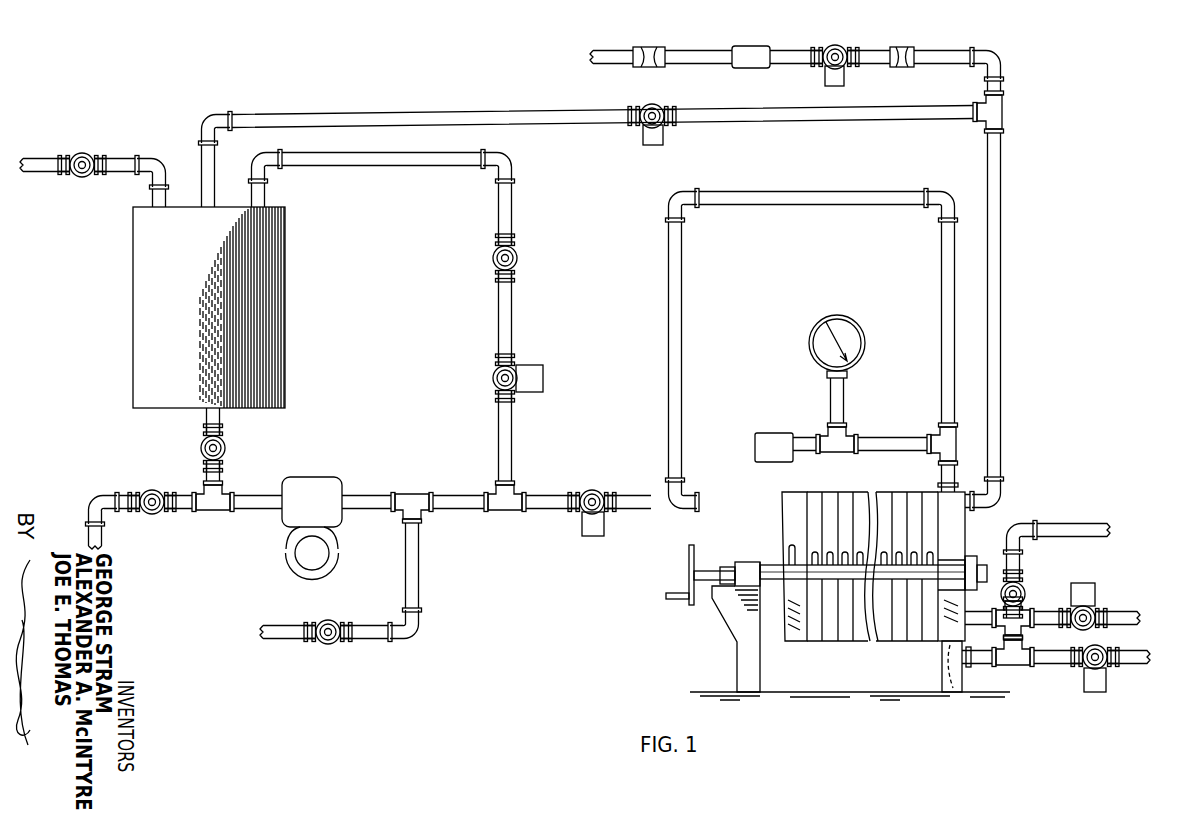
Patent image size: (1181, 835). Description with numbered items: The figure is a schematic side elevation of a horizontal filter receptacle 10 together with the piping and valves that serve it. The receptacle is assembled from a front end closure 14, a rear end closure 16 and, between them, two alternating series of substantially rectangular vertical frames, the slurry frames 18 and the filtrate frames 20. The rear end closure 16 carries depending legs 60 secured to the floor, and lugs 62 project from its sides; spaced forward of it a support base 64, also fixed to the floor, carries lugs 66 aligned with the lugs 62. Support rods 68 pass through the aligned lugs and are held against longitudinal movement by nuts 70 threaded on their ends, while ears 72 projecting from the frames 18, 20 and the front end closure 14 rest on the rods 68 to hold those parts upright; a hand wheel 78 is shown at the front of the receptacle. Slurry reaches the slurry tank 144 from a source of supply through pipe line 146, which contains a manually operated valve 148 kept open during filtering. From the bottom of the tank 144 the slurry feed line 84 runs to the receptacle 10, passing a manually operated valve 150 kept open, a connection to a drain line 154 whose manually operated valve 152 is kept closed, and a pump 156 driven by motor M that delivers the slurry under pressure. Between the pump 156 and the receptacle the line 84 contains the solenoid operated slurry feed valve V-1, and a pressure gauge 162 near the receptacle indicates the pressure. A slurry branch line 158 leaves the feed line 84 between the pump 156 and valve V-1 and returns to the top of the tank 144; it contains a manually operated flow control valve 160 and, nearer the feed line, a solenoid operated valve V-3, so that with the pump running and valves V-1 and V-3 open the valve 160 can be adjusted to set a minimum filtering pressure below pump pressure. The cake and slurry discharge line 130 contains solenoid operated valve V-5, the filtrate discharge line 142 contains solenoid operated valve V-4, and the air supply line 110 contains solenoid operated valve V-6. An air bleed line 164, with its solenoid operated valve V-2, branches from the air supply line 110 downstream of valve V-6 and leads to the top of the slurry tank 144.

The filter receptacle 10 is at (766, 501).
The front end closure 14 is at (793, 643).
The rear end closure 16 is at (948, 626).
The slurry frames 18 is at (810, 490).
The filtrate frames 20 is at (830, 490).
The legs 60 is at (940, 659).
The lugs 62 is at (951, 560).
The support base 64 is at (740, 655).
The lugs 66 is at (748, 562).
The support rods 68 is at (822, 580).
The nuts 70 is at (728, 562).
The ears 72 is at (817, 556).
The hand wheel 78 is at (688, 561).
The slurry feed line 84 is at (668, 332).
The air supply line 110 is at (866, 50).
The cake and slurry discharge line 130 is at (1040, 611).
The filtrate discharge line 142 is at (1050, 667).
The slurry tank 144 is at (133, 303).
The pipe line 146 is at (120, 157).
The manually operated valve 148 is at (82, 152).
The manually operated valve 150 is at (227, 447).
The manually operated valve 152 is at (148, 490).
The drain line 154 is at (112, 495).
The pump 156 is at (313, 477).
The slurry branch line 158 is at (512, 309).
The flow control valve 160 is at (513, 249).
The pressure gauge 162 is at (834, 315).
The air bleed line 164 is at (498, 107).
The motor M is at (339, 558).
The slurry feed valve V-1 is at (590, 487).
The solenoid operated valve V-2 is at (650, 125).
The solenoid operated valve V-3 is at (492, 376).
The solenoid operated valve V-4 is at (1106, 668).
The solenoid operated valve V-5 is at (1092, 608).
The solenoid operated valve V-6 is at (832, 46).